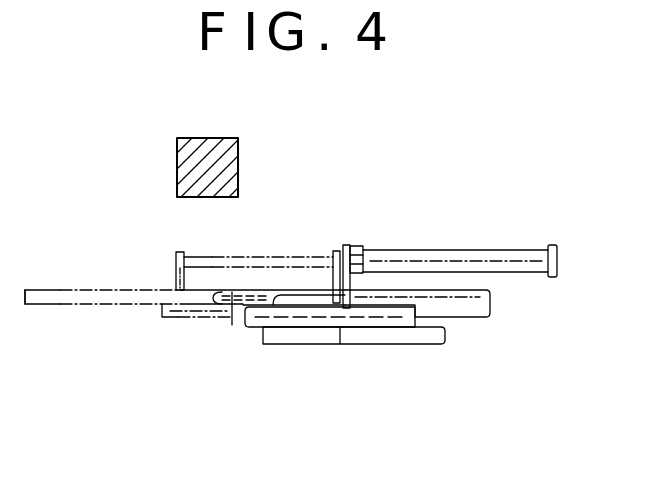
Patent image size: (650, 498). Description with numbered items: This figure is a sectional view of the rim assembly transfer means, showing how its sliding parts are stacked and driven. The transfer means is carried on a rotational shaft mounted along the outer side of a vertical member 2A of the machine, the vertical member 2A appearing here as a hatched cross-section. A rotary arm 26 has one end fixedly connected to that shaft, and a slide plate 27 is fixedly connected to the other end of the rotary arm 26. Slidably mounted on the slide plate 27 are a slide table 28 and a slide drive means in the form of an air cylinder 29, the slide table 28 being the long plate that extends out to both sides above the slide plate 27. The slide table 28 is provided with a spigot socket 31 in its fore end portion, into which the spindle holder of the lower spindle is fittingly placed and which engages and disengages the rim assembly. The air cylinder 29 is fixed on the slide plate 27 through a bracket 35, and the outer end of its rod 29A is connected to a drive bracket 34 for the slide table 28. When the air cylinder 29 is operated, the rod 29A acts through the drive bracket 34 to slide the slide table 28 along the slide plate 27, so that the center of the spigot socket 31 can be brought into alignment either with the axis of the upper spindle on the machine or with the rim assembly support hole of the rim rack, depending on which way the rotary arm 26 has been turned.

The vertical member 2A is at (238, 165).
The rotary arm 26 is at (403, 337).
The slide plate 27 is at (304, 323).
The slide table 28 is at (60, 289).
The air cylinder 29 is at (518, 250).
The rod 29A is at (207, 255).
The spigot socket 31 is at (253, 292).
The drive bracket 34 is at (174, 263).
The bracket 35 is at (353, 247).